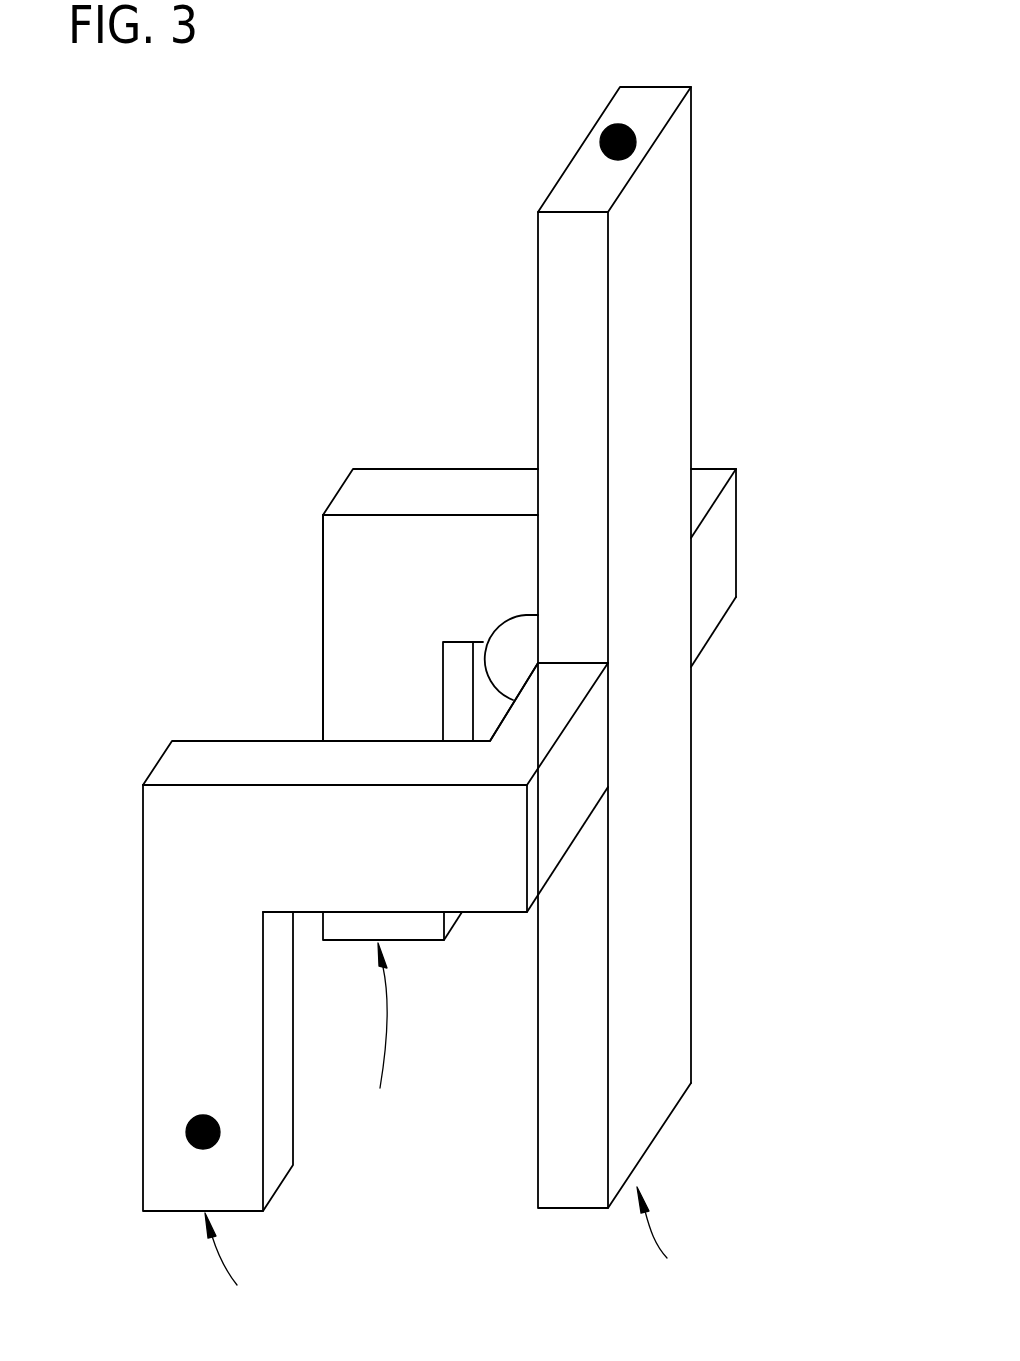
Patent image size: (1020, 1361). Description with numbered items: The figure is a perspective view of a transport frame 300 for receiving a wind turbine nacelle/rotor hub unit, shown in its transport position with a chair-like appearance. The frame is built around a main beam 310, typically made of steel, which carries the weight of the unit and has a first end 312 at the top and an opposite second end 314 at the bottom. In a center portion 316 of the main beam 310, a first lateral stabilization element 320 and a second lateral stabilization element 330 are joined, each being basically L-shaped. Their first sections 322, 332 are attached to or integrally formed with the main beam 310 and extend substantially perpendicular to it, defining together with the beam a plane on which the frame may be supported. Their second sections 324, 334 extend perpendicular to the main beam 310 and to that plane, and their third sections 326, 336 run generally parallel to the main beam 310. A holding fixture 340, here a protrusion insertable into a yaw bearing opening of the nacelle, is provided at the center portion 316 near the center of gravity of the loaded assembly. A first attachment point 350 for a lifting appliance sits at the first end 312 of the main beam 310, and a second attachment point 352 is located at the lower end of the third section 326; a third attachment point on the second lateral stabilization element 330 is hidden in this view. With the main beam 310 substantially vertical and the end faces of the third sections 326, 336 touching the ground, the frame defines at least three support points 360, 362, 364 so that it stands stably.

The transport frame 300 is at (252, 252).
The main beam 310 is at (664, 895).
The first end 312 is at (660, 197).
The second end 314 is at (640, 1128).
The center portion 316 is at (653, 672).
The first lateral stabilization element 320 is at (155, 778).
The first section 322 is at (542, 728).
The second section 324 is at (473, 890).
The third section 326 is at (162, 997).
The second lateral stabilization element 330 is at (337, 488).
The first section 332 is at (700, 510).
The second section 334 is at (463, 488).
The third section 336 is at (343, 635).
The holding fixture 340 is at (482, 652).
The first attachment point 350 is at (601, 134).
The second attachment point 352 is at (186, 1128).
The support point 360 is at (675, 1242).
The support point 362 is at (244, 1267).
The support point 364 is at (368, 1034).